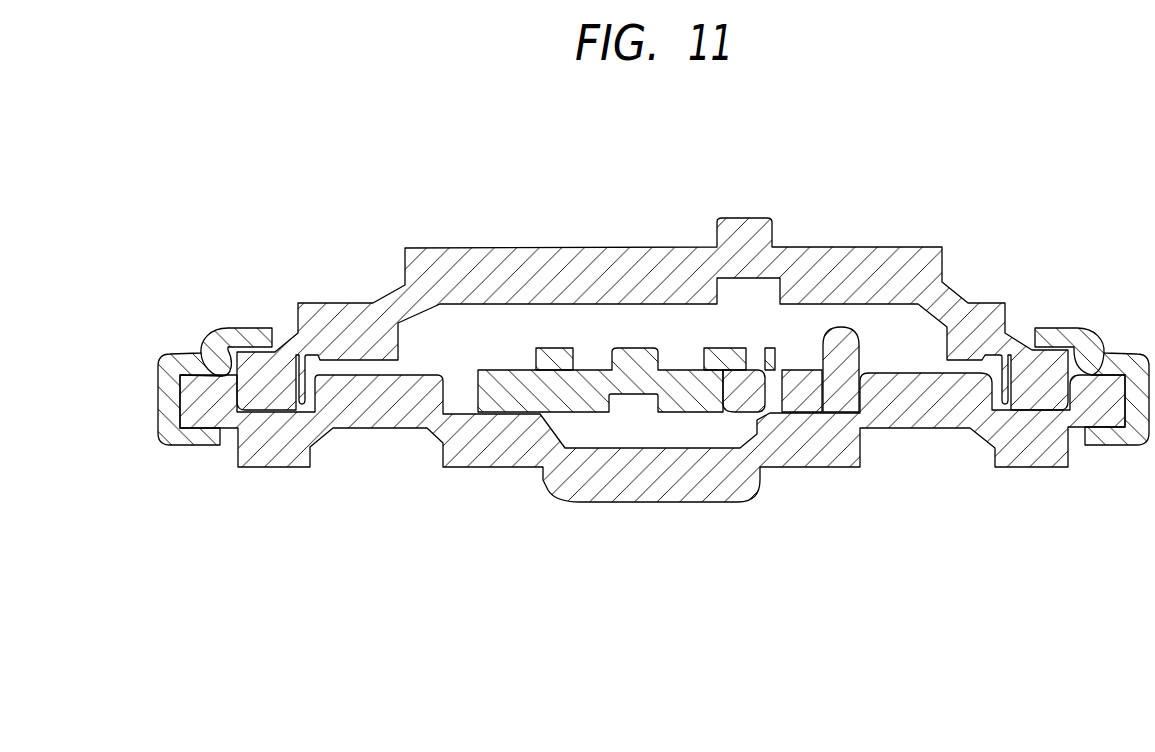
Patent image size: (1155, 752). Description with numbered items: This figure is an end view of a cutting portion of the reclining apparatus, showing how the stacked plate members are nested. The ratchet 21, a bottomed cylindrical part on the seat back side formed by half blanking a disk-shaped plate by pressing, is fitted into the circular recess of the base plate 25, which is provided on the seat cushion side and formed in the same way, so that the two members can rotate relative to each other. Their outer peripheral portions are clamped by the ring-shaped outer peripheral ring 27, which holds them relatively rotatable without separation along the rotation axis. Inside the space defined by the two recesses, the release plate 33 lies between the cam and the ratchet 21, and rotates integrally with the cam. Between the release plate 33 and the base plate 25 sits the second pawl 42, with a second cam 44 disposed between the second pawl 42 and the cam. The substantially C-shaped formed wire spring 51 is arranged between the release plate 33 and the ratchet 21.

The ratchet 21 is at (500, 258).
The base plate 25 is at (664, 495).
The outer peripheral ring 27 is at (235, 325).
The release plate 33 is at (555, 347).
The second pawl 42 is at (513, 400).
The second cam 44 is at (742, 397).
The formed wire spring 51 is at (840, 328).